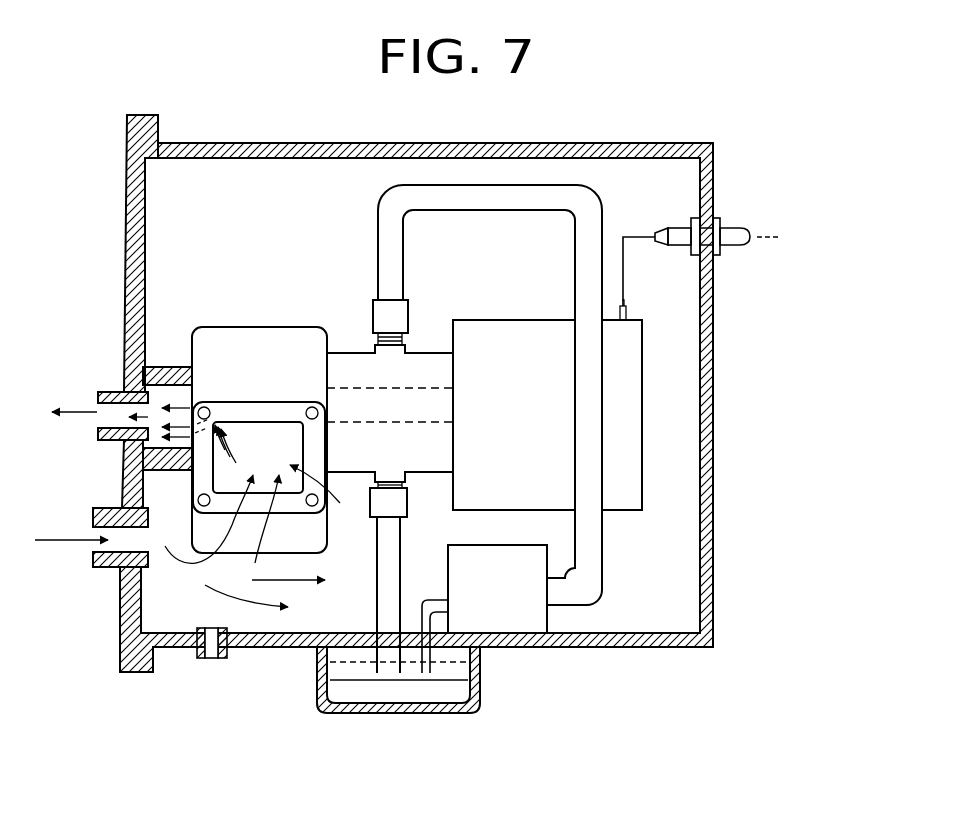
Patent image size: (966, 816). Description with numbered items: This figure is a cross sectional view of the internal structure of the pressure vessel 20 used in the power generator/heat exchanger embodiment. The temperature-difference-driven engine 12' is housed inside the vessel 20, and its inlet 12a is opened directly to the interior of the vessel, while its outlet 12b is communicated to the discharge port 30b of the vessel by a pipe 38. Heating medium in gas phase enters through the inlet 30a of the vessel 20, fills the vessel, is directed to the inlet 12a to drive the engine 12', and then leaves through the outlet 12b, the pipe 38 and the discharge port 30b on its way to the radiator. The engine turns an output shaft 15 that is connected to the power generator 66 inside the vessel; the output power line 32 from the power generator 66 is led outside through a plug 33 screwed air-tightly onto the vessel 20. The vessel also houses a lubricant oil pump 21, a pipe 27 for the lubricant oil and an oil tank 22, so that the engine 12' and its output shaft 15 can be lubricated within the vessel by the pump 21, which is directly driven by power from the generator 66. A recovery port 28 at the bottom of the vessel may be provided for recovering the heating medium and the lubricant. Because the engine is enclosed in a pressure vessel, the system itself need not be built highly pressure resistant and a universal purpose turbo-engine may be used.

The vessel 20 is at (518, 143).
The temperature-difference-driven engine 12' is at (260, 391).
The inlet 12a is at (278, 460).
The outlet 12b is at (180, 367).
The inlet 30a is at (92, 548).
The discharge port 30b is at (103, 420).
The pipe 38 is at (168, 470).
The output shaft 15 is at (420, 425).
The pipe 27 is at (495, 211).
The output power line 32 is at (623, 283).
The plug 33 is at (740, 228).
The power generator 66 is at (628, 463).
The lubricant oil pump 21 is at (503, 618).
The oil tank 22 is at (480, 705).
The recovery port 28 is at (212, 660).